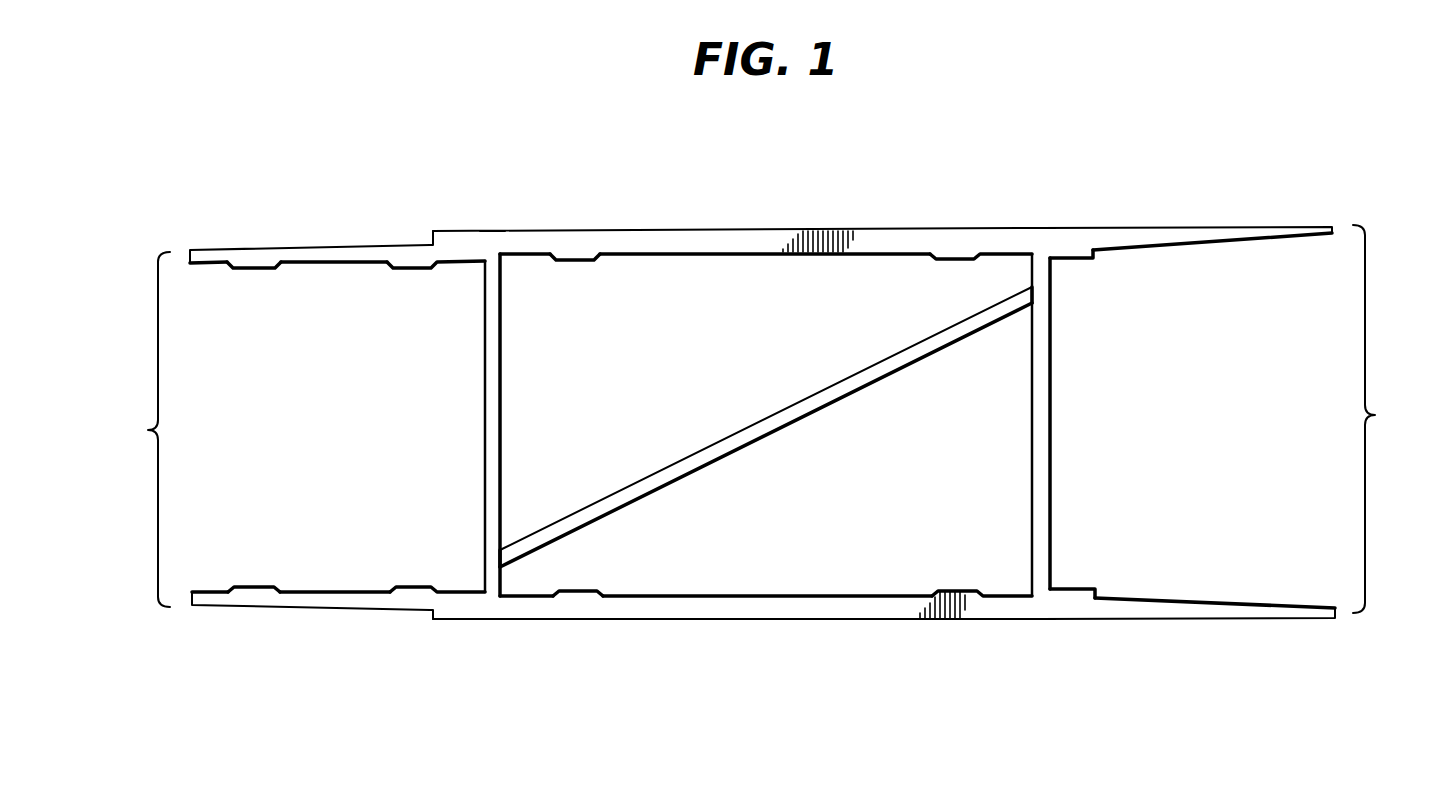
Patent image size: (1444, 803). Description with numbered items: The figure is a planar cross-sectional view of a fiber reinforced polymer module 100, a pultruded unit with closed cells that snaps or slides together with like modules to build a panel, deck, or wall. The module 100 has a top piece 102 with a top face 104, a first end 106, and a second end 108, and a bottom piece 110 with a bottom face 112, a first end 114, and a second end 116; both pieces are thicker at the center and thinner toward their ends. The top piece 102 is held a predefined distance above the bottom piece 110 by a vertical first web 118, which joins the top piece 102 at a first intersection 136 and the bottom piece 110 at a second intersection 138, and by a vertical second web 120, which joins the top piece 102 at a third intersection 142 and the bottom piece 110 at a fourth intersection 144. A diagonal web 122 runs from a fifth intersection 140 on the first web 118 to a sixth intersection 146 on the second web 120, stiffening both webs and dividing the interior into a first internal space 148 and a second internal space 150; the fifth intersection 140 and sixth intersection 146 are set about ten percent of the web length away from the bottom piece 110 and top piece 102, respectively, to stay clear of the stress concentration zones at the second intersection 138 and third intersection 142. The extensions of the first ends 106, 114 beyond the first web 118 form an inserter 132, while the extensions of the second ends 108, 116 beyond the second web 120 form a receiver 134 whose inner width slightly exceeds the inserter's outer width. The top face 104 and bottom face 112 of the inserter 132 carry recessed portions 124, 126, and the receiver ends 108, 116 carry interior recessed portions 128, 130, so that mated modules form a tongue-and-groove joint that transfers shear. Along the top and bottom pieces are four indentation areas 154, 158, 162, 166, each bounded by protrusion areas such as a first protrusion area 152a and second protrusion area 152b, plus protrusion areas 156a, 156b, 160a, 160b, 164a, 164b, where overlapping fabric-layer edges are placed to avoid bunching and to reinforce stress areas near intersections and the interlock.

The fiber reinforced polymer (FRP) module 100 is at (1288, 146).
The top piece 102 is at (690, 242).
The top face 104 is at (903, 227).
The first end of the top piece 106 is at (206, 250).
The second end of the top piece 108 is at (1313, 227).
The bottom piece 110 is at (658, 620).
The bottom face 112 is at (770, 622).
The first end of the bottom piece 114 is at (203, 608).
The second end of the bottom piece 116 is at (1320, 620).
The first web 118 is at (494, 414).
The second web 120 is at (1038, 393).
The diagonal web 122 is at (742, 450).
The recessed portion 124 is at (432, 244).
The recessed portion 126 is at (432, 620).
The interior recessed portion 128 is at (1095, 252).
The interior recessed portion 130 is at (1098, 595).
The inserter 132 is at (137, 429).
The receiver 134 is at (1388, 419).
The first intersection 136 is at (487, 242).
The second intersection 138 is at (496, 620).
The fifth intersection 140 is at (495, 558).
The third intersection 142 is at (1040, 237).
The fourth intersection 144 is at (1040, 622).
The sixth intersection 146 is at (1038, 290).
The first internal space 148 is at (709, 372).
The second internal space 150 is at (929, 481).
The first protrusion area 152a is at (252, 268).
The second protrusion area 152b is at (412, 270).
The indentation area 154 is at (320, 265).
The protrusion area 156a is at (252, 584).
The protrusion area 156b is at (413, 585).
The indentation area 158 is at (326, 588).
The protrusion area 160a is at (572, 262).
The protrusion area 160b is at (937, 258).
The indentation area 162 is at (767, 257).
The protrusion area 164a is at (590, 592).
The protrusion area 164b is at (953, 590).
The indentation area 166 is at (770, 595).